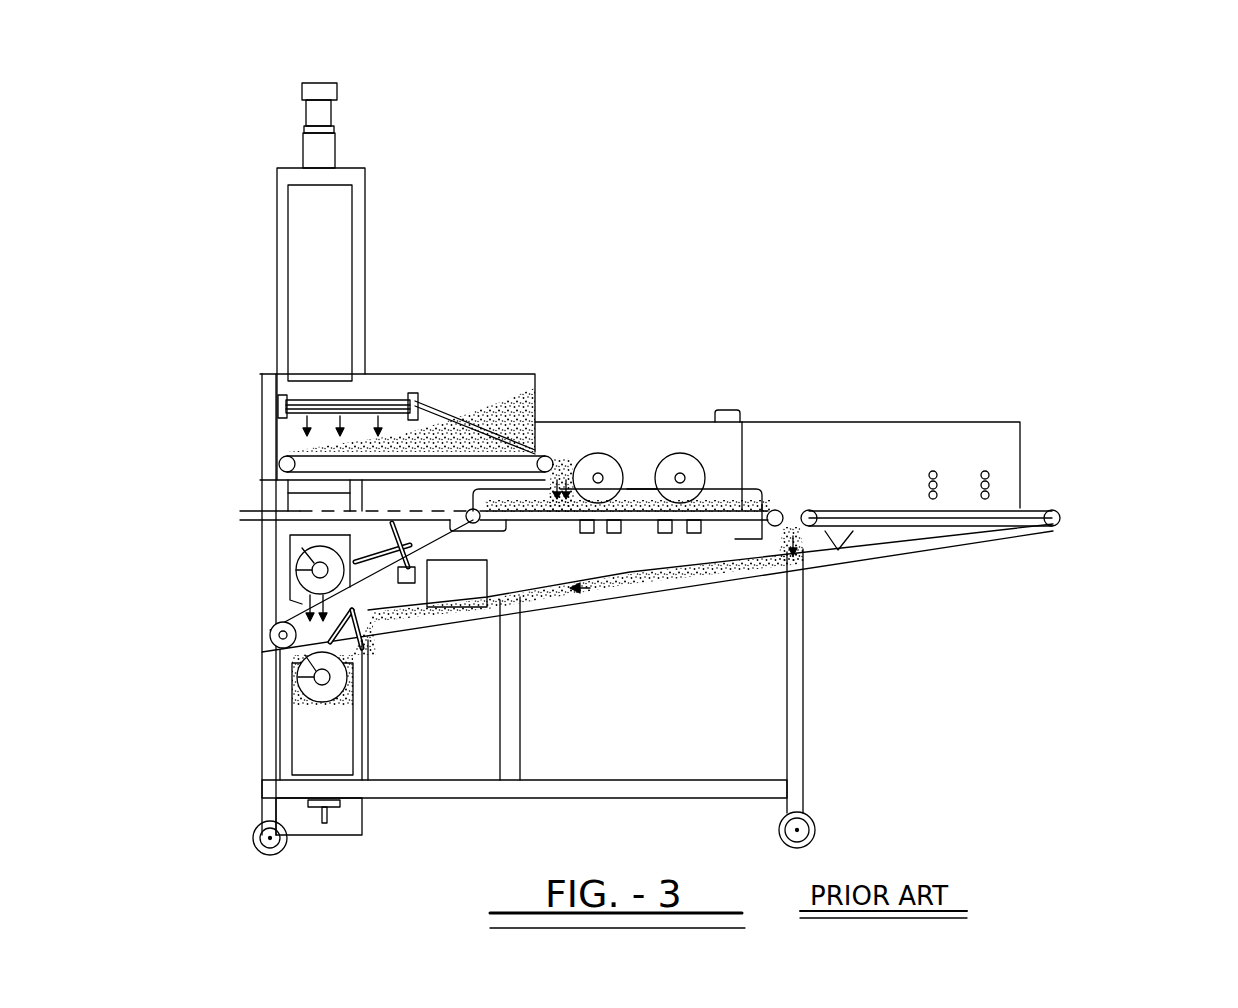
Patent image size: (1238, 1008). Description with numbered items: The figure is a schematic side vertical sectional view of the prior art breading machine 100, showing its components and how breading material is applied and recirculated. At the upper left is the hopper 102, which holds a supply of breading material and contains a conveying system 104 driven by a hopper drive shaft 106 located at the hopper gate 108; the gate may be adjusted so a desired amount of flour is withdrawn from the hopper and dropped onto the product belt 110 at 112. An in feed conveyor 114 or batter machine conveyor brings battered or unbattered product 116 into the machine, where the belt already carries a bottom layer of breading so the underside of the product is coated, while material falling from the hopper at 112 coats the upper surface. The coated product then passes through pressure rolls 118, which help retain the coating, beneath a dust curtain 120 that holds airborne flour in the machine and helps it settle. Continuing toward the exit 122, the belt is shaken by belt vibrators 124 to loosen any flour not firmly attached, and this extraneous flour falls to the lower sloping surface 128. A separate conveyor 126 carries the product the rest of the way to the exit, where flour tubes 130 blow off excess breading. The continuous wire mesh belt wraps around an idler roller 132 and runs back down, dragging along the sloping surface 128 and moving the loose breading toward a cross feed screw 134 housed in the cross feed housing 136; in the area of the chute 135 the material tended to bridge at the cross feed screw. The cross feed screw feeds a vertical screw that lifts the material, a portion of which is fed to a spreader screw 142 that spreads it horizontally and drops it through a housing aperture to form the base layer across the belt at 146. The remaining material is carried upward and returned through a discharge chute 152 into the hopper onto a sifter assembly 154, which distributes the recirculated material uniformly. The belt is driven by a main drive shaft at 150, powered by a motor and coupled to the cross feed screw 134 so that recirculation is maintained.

The breading machine 100 is at (887, 295).
The hopper 102 is at (452, 373).
The conveying system 104 is at (280, 462).
The hopper drive shaft 106 is at (546, 455).
The hopper gate 108 is at (522, 445).
The product belt 110 is at (557, 526).
The breading discharge location 112 is at (565, 462).
The in feed conveyor 114 is at (245, 510).
The product 116 is at (545, 522).
The pressure rolls 118 is at (672, 460).
The dust curtain 120 is at (745, 422).
The exit 122 is at (1029, 495).
The belt vibrators 124 is at (752, 537).
The separate conveyor 126 is at (866, 510).
The lower sloping surface 128 is at (707, 585).
The flour tubes 130 is at (986, 472).
The idler roller 132 is at (1058, 515).
The cross feed screw 134 is at (310, 678).
The chute 135 is at (338, 738).
The cross feed housing 136 is at (318, 708).
The spreader screw 142 is at (296, 570).
The breading layer location 146 is at (292, 622).
The main drive shaft 150 is at (268, 636).
The discharge chute 152 is at (310, 283).
The sifter assembly 154 is at (372, 396).